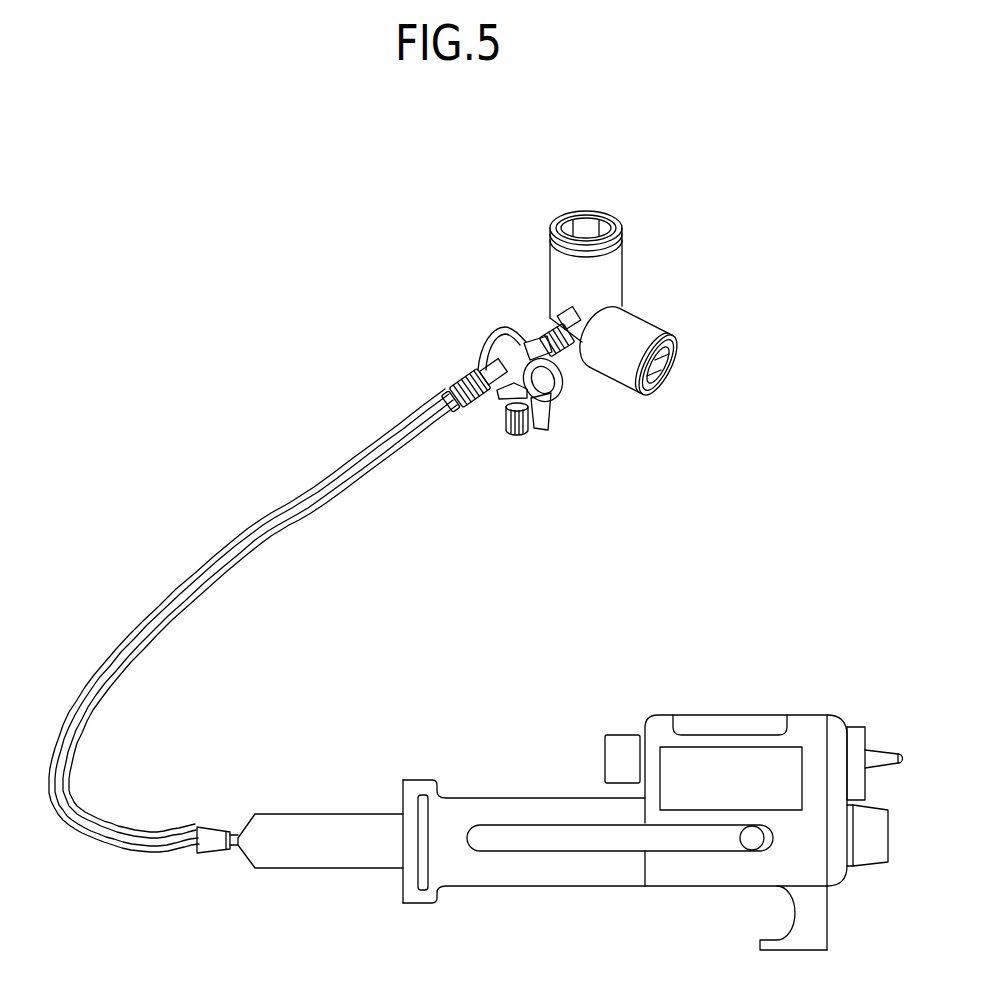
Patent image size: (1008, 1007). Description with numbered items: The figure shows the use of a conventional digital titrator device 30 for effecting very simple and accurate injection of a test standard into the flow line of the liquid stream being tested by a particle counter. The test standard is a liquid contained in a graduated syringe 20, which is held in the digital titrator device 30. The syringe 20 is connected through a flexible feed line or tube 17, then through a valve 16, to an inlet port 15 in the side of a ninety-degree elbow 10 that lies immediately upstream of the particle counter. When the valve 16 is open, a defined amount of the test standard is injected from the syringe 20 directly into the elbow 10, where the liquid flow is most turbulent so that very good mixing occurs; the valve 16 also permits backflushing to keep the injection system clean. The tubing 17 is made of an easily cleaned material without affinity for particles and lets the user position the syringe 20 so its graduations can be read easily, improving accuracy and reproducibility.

The 90° elbow 10 is at (633, 327).
The inlet port 15 is at (560, 313).
The valve 16 is at (488, 345).
The feed line or tube 17 is at (252, 522).
The graduated syringe 20 is at (352, 810).
The digital titrator device 30 is at (585, 895).